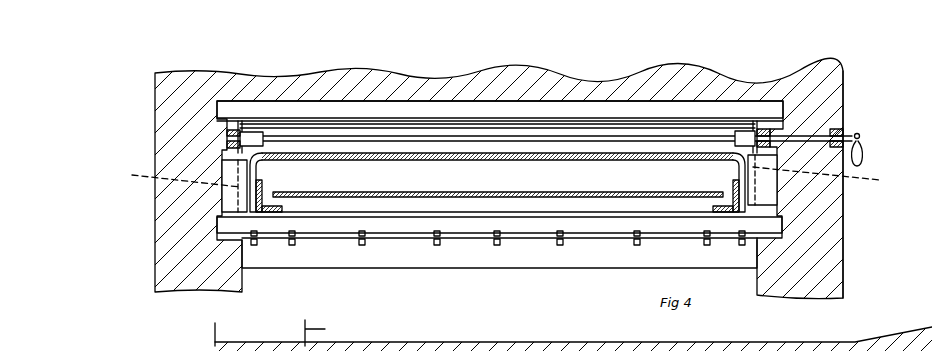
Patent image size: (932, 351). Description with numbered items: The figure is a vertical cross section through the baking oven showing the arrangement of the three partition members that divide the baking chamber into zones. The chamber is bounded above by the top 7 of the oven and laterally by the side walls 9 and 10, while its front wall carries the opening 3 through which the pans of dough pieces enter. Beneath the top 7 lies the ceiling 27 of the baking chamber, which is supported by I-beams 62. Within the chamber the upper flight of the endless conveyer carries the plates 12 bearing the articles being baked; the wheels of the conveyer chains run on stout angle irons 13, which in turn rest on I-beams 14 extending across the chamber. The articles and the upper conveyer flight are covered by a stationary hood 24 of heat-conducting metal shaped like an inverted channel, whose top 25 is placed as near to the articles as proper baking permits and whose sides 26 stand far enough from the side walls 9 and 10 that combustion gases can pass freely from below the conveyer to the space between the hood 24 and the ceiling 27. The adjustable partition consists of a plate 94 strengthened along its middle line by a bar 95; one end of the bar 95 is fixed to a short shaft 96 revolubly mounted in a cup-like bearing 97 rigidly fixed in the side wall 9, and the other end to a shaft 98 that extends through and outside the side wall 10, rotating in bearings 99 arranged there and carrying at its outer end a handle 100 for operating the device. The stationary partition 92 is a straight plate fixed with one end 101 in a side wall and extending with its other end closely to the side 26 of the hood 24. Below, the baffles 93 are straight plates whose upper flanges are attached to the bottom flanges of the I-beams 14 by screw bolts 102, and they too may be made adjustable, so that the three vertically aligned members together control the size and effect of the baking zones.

The opening 3 is at (322, 333).
The top 7 is at (277, 83).
The side wall 9 is at (168, 211).
The side wall 10 is at (820, 226).
The plates 12 is at (398, 193).
The angle irons 13 is at (262, 196).
The I-beams 14 is at (225, 228).
The hood 24 is at (579, 171).
The top of the hood 25 is at (466, 160).
The sides of the hood 26 is at (257, 177).
The ceiling 27 is at (555, 117).
The I-beams 62 is at (377, 107).
The stationary partition 92 is at (502, 176).
The baffles 93 is at (467, 263).
The plate 94 is at (455, 127).
The bar 95 is at (307, 137).
The short shaft 96 is at (252, 139).
The cup-like bearing 97 is at (228, 145).
The shaft 98 is at (810, 128).
The bearings 99 is at (763, 127).
The handle 100 is at (881, 153).
The end 101 is at (228, 202).
The screw bolts 102 is at (562, 246).